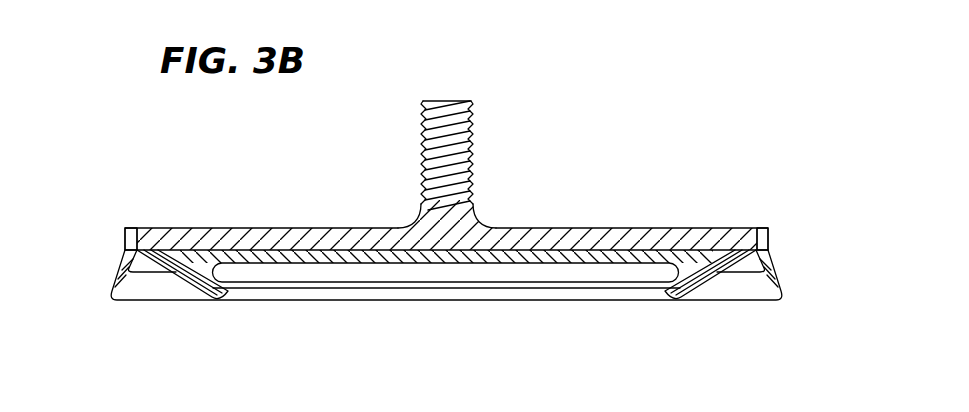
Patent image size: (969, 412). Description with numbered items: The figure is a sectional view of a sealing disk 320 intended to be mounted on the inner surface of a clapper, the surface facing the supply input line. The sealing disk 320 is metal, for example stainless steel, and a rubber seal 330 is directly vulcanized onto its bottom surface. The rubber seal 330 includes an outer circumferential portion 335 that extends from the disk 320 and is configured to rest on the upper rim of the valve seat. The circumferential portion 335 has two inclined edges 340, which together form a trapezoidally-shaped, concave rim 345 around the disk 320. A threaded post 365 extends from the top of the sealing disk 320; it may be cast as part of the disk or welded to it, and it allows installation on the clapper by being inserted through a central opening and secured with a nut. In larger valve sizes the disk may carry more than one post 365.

The sealing disk 320 is at (580, 74).
The rubber seal 330 is at (343, 263).
The outer circumferential portion 335 is at (125, 257).
The inclined edges 340 is at (108, 301).
The concave rim 345 is at (165, 285).
The threaded post 365 is at (453, 99).